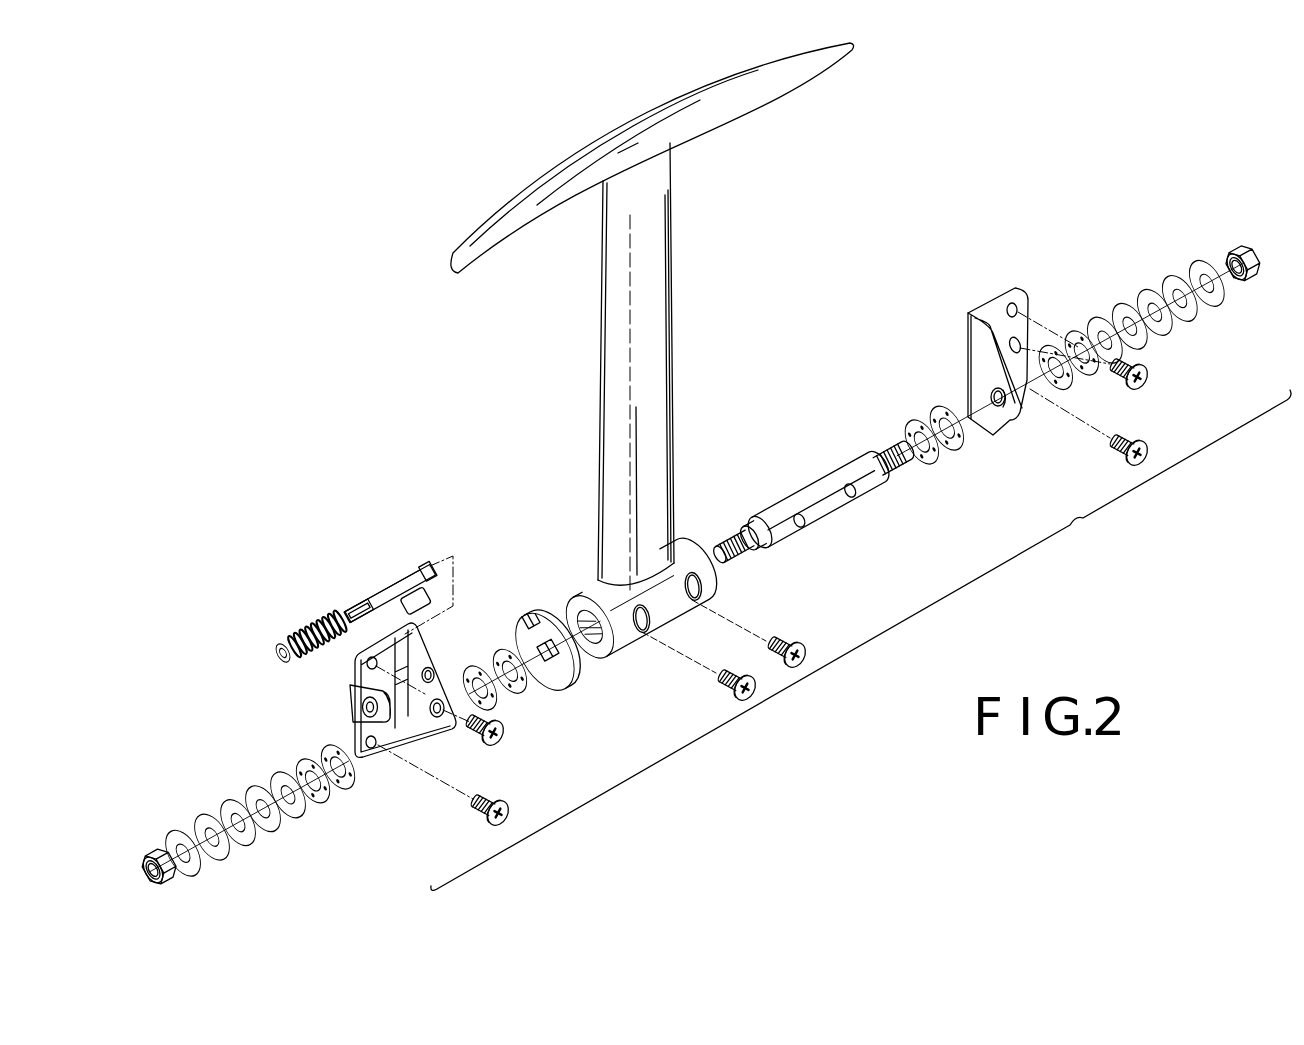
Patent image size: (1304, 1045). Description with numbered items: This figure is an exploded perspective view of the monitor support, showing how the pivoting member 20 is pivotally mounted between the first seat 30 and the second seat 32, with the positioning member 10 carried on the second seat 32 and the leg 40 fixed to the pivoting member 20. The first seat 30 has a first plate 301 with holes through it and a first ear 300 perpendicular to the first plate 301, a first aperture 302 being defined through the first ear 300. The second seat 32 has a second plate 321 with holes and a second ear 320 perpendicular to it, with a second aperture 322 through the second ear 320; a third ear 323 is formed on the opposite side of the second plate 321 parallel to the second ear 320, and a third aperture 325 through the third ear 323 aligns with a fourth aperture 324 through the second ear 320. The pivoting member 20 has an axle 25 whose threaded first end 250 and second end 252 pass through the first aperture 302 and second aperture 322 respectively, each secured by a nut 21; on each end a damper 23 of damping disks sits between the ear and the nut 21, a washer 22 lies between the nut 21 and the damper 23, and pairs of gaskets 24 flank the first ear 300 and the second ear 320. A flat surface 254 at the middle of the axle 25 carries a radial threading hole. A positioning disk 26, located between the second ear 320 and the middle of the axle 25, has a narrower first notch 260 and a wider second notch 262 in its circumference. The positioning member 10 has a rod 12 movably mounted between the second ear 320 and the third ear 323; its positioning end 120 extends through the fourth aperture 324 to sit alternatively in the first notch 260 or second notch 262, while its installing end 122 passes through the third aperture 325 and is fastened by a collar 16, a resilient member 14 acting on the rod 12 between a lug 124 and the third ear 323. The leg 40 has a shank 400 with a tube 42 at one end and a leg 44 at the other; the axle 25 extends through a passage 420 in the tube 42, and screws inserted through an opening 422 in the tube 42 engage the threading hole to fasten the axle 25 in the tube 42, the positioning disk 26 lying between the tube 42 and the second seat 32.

The positioning member 10 is at (364, 603).
The rod 12 is at (422, 573).
The positioning end 120 is at (436, 568).
The installing end 122 is at (360, 612).
The lug 124 is at (426, 600).
The resilient member 14 is at (302, 652).
The collar 16 is at (278, 657).
The pivoting member 20 is at (861, 640).
The nut 21 is at (150, 855).
The washer 22 is at (178, 836).
The damper 23 is at (283, 755).
The gaskets 24 is at (366, 793).
The axle 25 is at (799, 492).
The first end 250 is at (882, 452).
The second end 252 is at (745, 524).
The flat surface 254 is at (820, 513).
The positioning disk 26 is at (540, 626).
The first notch 260 is at (534, 612).
The second notch 262 is at (540, 642).
The first seat 30 is at (1030, 355).
The first ear 300 is at (968, 356).
The first plate 301 is at (1018, 307).
The first aperture 302 is at (1003, 423).
The second seat 32 is at (384, 726).
The second ear 320 is at (447, 730).
The second plate 321 is at (358, 757).
The second aperture 322 is at (443, 778).
The third ear 323 is at (352, 696).
The fourth aperture 324 is at (432, 672).
The third aperture 325 is at (360, 711).
The leg 40 is at (652, 316).
The shank 400 is at (603, 318).
The tube 42 is at (637, 603).
The passage 420 is at (628, 634).
The opening 422 is at (700, 603).
The leg 44 is at (637, 126).